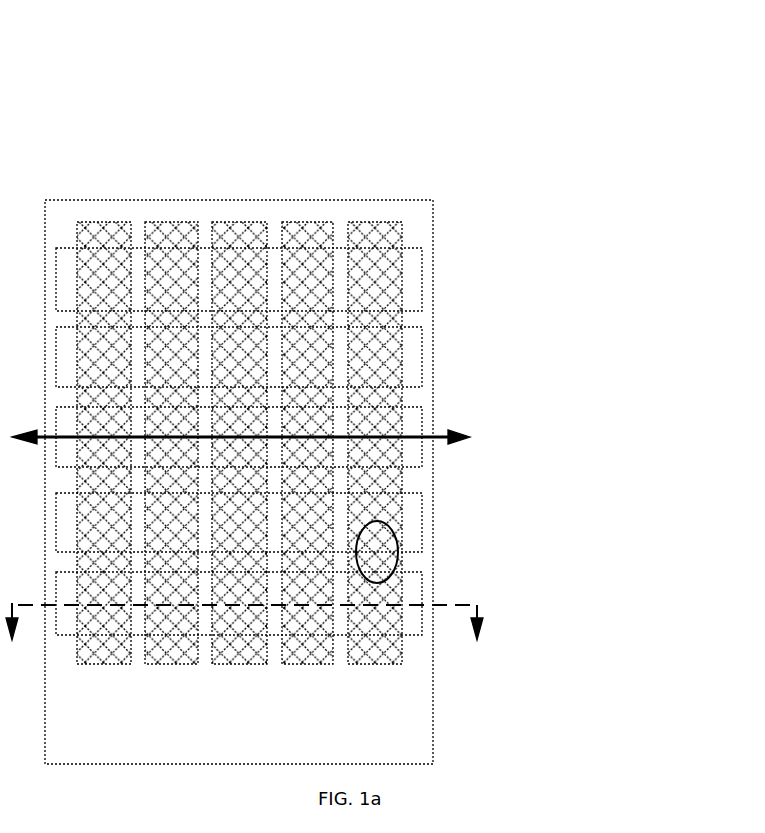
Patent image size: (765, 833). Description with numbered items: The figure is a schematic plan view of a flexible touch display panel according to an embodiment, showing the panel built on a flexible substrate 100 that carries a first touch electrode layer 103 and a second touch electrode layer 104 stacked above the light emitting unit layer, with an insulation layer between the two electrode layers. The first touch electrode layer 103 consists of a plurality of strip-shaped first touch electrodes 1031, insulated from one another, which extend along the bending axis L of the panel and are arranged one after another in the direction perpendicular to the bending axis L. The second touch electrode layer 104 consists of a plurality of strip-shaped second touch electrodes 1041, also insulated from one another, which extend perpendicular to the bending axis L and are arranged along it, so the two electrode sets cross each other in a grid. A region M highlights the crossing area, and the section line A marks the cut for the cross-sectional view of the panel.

The flexible substrate 100 is at (407, 725).
The first touch electrode layer 103 is at (360, 441).
The first touch electrode 1031 is at (423, 273).
The second touch electrode layer 104 is at (233, 337).
The second touch electrode 1041 is at (102, 222).
The bending axis L is at (263, 433).
The overlap region M is at (400, 543).
The section line A- A is at (247, 643).